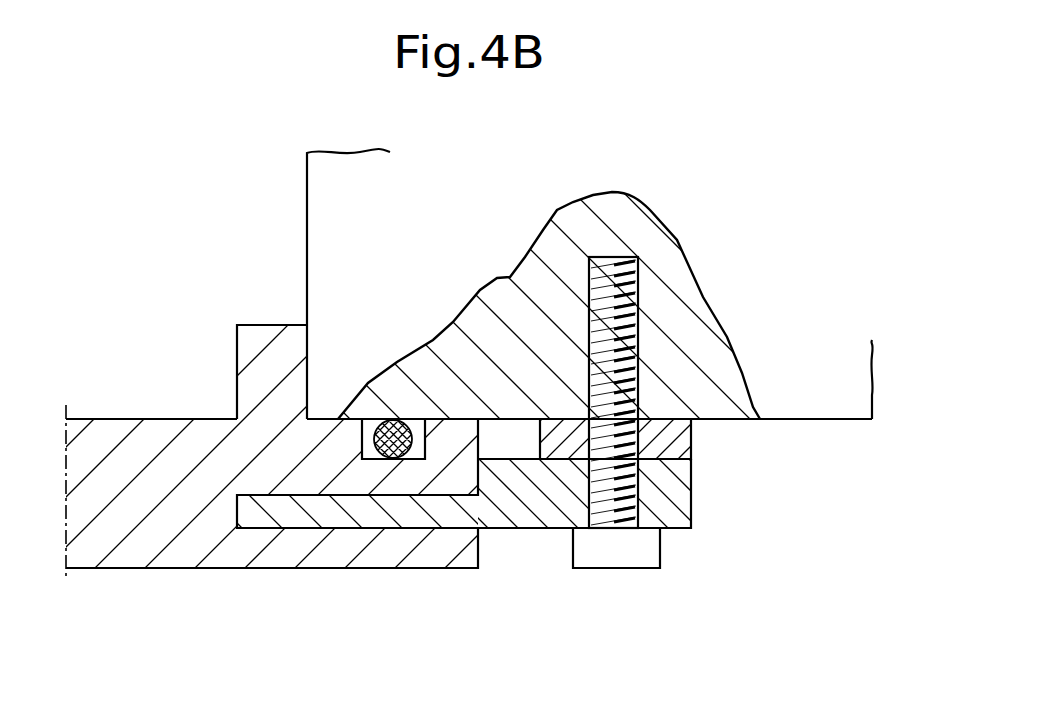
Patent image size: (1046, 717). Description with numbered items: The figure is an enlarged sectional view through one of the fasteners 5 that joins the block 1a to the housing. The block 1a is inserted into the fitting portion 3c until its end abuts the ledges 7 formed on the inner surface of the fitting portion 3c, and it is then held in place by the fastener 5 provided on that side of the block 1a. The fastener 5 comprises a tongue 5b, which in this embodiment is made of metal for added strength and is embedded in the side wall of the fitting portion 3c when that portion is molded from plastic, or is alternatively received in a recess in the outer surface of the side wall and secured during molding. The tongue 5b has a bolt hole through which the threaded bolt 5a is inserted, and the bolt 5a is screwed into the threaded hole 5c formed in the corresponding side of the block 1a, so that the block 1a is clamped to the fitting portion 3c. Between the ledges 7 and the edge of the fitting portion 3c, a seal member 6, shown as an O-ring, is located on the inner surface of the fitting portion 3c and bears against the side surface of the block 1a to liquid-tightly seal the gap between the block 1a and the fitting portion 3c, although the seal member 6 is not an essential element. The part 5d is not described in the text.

The block 1a is at (332, 225).
The ledges 7 is at (247, 360).
The fitting portion 3c is at (160, 543).
The seal member 6 is at (382, 460).
The fastener 5 is at (614, 461).
The threaded bolt 5a is at (620, 548).
The tongue 5b is at (528, 497).
The hole 5c is at (627, 317).
The washer 5d is at (680, 438).